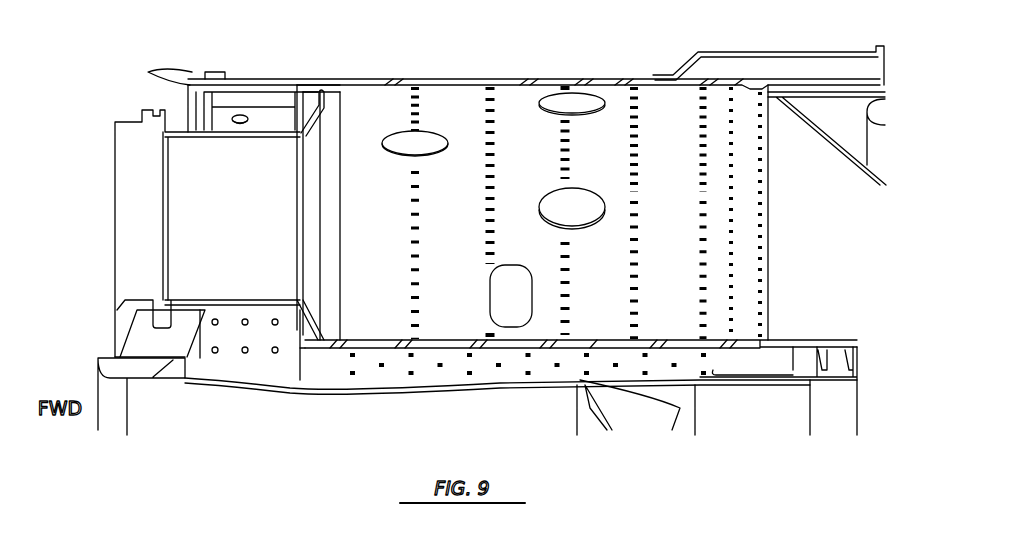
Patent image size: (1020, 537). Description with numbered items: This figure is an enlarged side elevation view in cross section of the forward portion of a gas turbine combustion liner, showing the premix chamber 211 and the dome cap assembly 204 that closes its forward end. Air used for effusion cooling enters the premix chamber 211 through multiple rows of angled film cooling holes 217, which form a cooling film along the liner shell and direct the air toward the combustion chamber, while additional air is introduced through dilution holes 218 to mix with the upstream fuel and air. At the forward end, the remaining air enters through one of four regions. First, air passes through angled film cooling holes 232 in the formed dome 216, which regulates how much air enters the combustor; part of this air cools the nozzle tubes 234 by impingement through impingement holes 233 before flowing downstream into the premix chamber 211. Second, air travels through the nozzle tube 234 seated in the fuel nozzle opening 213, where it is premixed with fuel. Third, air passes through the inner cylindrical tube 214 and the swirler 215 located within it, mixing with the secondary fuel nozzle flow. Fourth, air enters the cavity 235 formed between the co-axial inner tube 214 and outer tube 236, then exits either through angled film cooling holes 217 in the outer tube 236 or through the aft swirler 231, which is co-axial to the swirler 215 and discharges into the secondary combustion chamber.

The dome cap assembly 204 is at (105, 345).
The premix chamber 211 is at (534, 187).
The openings for multiple fuel nozzles 213 is at (191, 237).
The inner cylindrical tube 214 is at (193, 429).
The swirler 215 is at (623, 425).
The formed dome 216 is at (308, 115).
The angled film cooling holes 217 is at (402, 84).
The dilution holes 218 is at (576, 102).
The aft swirler 231 is at (857, 360).
The angled film cooling holes in dome plate 232 is at (303, 120).
The impingement holes 233 is at (267, 107).
The nozzle tube 234 is at (215, 140).
The cavity 235 is at (387, 368).
The outer tube 236 is at (740, 340).